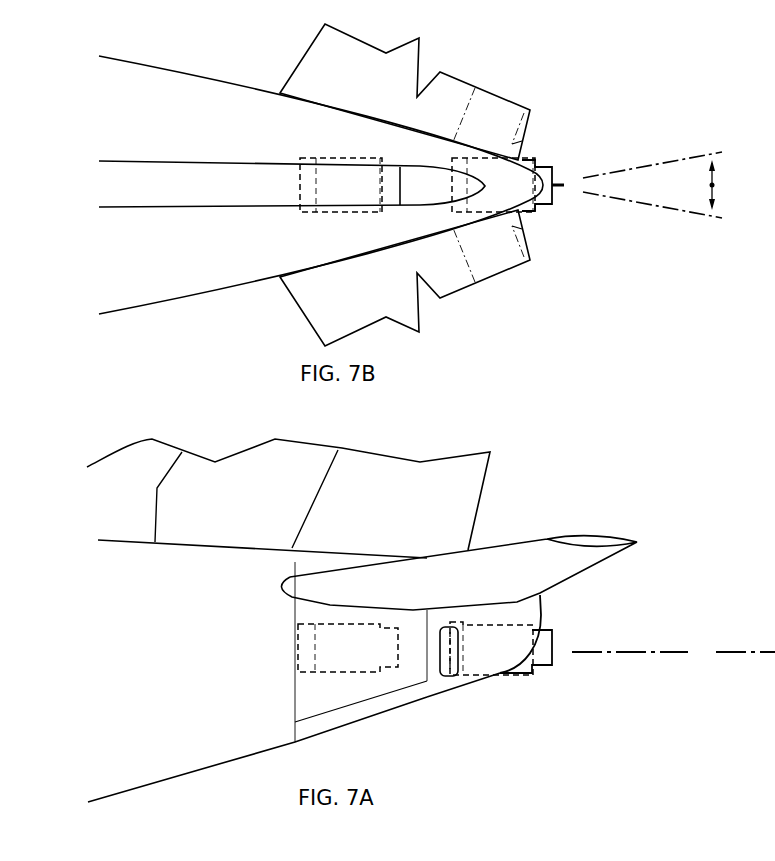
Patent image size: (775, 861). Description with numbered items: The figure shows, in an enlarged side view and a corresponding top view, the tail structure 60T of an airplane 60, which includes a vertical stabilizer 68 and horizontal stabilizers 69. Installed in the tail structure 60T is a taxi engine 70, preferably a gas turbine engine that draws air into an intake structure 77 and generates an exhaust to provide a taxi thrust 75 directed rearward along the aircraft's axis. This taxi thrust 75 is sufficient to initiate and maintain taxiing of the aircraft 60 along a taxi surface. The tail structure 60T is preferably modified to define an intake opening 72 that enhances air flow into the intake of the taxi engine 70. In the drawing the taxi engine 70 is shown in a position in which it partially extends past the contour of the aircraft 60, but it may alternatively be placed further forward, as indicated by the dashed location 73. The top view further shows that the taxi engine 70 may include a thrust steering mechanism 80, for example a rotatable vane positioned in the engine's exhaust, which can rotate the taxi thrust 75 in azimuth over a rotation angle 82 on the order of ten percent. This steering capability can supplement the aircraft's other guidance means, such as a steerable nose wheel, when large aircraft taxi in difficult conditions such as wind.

In FIG. 7B, the airplane 60 is at (155, 308).
In FIG. 7A, the airplane 60 is at (152, 788).
In FIG. 7A, the tail structure 60T is at (542, 707).
In FIG. 7B, the vertical stabilizer 68 is at (212, 158).
In FIG. 7A, the vertical stabilizer 68 is at (487, 480).
In FIG. 7B, the horizontal stabilizers 69 is at (532, 138).
In FIG. 7A, the horizontal stabilizers 69 is at (545, 538).
In FIG. 7B, the taxi engine 70 is at (537, 208).
In FIG. 7A, the taxi engine 70 is at (557, 668).
In FIG. 7A, the intake opening 72 is at (450, 679).
In FIG. 7B, the location 73 is at (302, 220).
In FIG. 7A, the location 73 is at (352, 674).
In FIG. 7A, the taxi thrust 75 is at (673, 653).
In FIG. 7A, the intake structure 77 is at (768, 518).
In FIG. 7B, the thrust steering mechanism 80 is at (560, 178).
In FIG. 7B, the rotation angle 82 is at (712, 185).